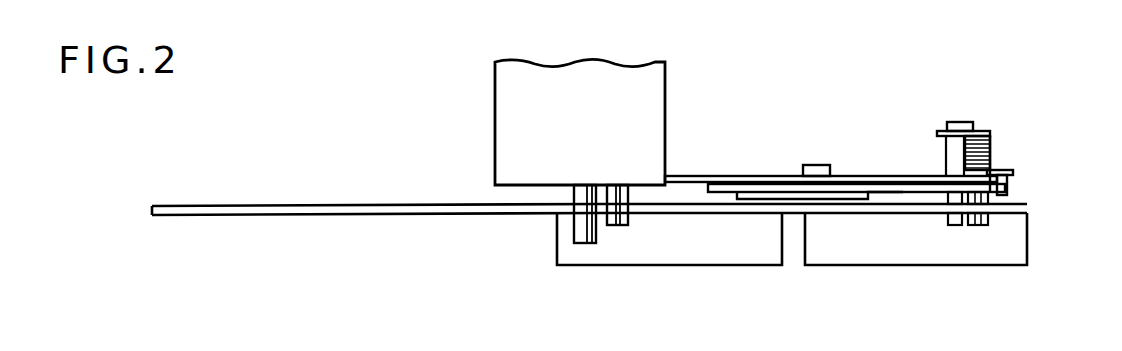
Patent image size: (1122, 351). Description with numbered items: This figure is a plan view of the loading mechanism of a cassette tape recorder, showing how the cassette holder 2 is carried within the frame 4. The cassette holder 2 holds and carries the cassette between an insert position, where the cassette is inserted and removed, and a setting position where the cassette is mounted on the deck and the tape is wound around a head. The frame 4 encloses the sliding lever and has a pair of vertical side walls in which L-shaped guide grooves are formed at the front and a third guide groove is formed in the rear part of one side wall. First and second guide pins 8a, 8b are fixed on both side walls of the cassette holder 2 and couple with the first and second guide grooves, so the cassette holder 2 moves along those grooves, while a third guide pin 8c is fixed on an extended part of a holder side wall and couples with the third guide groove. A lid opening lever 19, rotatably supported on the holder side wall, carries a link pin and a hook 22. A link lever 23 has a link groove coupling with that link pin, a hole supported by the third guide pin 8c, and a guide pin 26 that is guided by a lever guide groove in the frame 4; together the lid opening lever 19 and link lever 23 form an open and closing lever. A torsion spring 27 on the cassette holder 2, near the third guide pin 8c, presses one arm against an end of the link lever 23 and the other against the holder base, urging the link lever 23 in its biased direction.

The cassette holder 2 is at (654, 97).
The frame 4 is at (368, 217).
The first guide pin 8a is at (578, 232).
The second guide pin 8b is at (618, 226).
The third guide pin 8c is at (955, 226).
The lid opening lever 19 is at (730, 186).
The hook 22 is at (820, 165).
The link lever 23 is at (903, 190).
The guide pin 26 is at (980, 218).
The torsion spring 27 is at (980, 122).